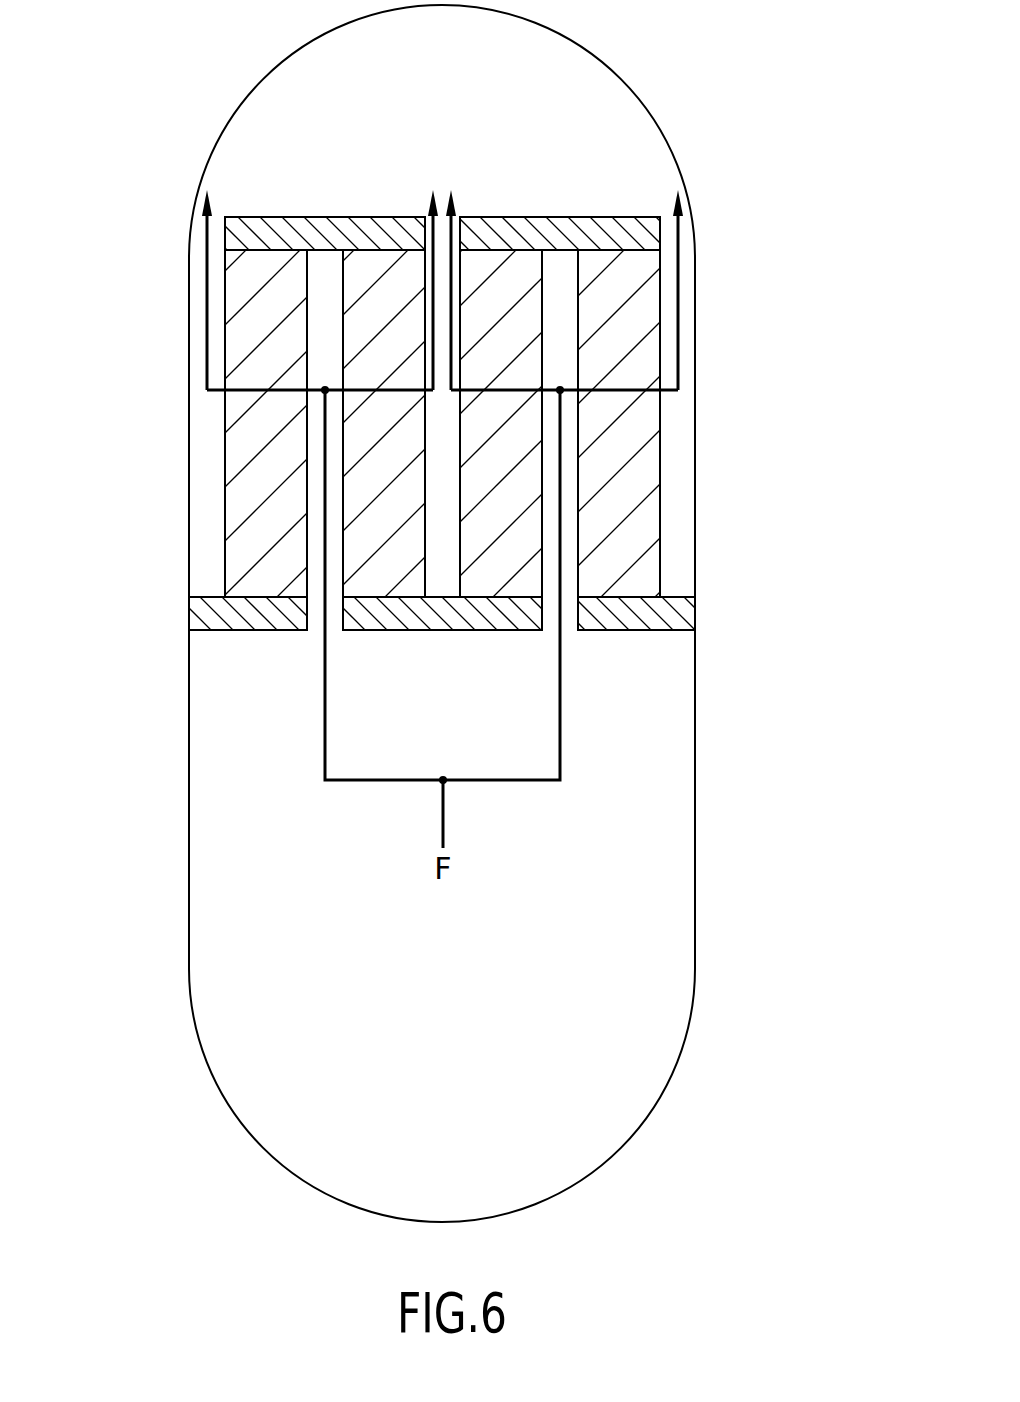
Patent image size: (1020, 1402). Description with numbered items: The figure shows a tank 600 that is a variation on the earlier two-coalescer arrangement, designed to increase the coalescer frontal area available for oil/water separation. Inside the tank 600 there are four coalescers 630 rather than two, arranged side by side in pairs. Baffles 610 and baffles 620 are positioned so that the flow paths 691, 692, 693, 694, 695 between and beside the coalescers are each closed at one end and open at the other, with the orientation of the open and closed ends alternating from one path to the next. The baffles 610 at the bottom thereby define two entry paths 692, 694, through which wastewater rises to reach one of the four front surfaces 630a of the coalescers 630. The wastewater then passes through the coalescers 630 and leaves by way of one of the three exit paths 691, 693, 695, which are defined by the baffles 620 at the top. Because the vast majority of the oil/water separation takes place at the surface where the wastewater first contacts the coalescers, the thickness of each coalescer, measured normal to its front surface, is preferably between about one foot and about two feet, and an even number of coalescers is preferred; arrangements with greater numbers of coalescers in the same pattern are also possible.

The tank 600 is at (697, 228).
The baffles 610 is at (242, 618).
The baffles 620 is at (367, 232).
The coalescers 630 is at (442, 422).
The front surfaces 630a is at (337, 297).
The exit path 691 is at (205, 545).
The entry path 692 is at (317, 513).
The exit path 693 is at (438, 570).
The entry path 694 is at (570, 485).
The exit path 695 is at (673, 530).